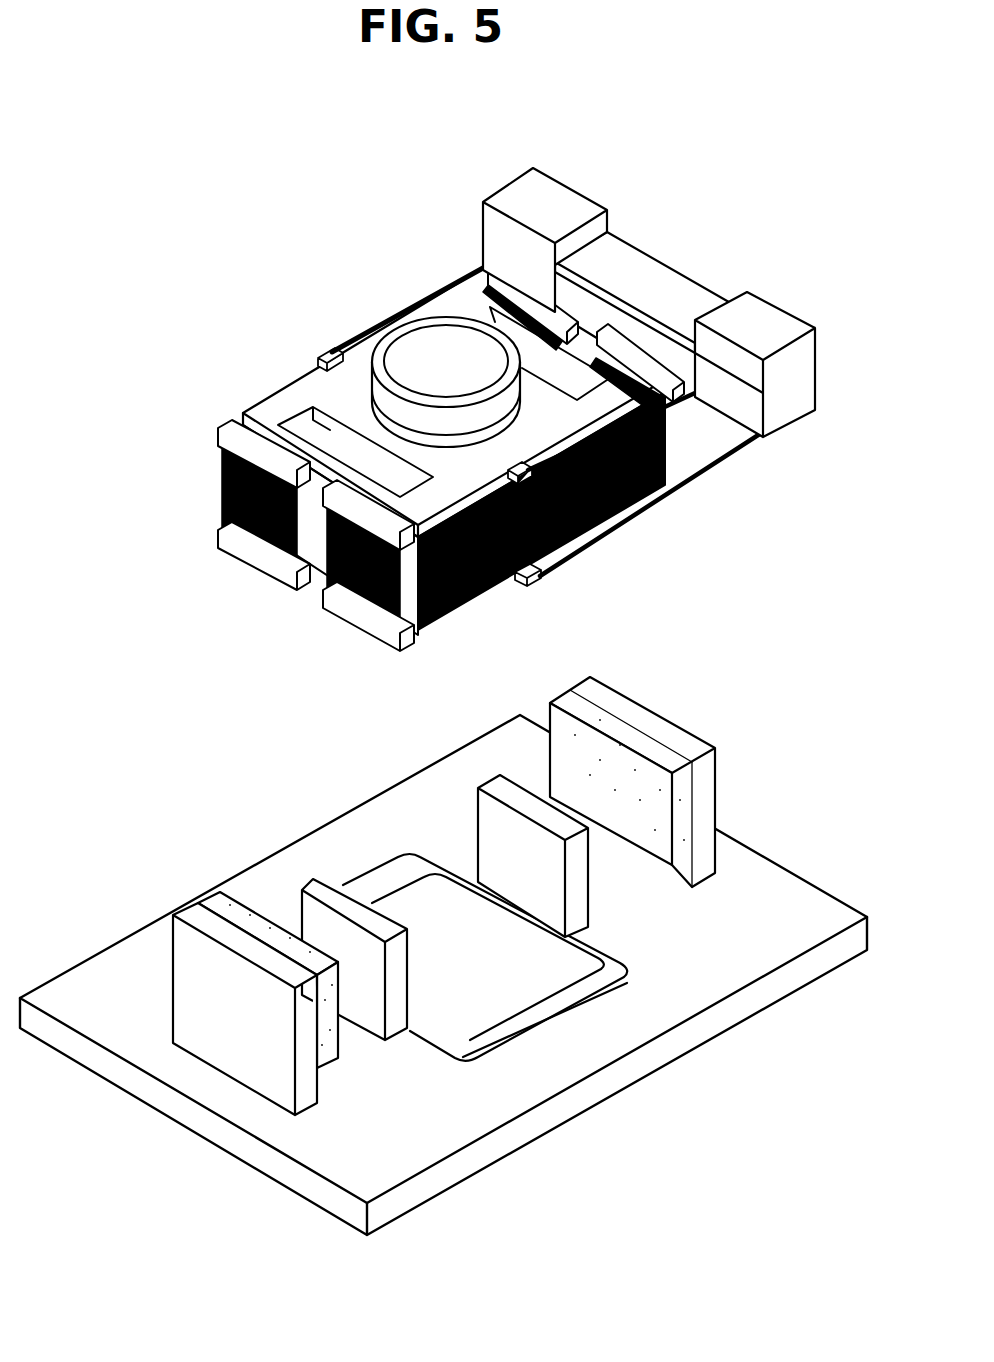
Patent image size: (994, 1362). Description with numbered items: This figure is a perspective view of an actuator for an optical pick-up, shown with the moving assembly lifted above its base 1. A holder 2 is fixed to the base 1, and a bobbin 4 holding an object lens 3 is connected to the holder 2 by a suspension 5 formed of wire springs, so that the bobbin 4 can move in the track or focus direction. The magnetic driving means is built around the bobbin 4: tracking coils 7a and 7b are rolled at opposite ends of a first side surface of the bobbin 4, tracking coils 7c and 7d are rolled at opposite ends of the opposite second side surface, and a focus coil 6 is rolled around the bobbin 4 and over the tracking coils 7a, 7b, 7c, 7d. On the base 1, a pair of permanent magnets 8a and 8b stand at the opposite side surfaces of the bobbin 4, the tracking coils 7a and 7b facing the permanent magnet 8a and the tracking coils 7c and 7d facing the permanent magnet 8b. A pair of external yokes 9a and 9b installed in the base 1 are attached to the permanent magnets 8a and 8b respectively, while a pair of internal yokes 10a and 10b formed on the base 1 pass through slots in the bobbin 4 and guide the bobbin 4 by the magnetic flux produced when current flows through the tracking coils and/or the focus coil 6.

The base 1 is at (808, 905).
The holder 2 is at (642, 270).
The object lens 3 is at (428, 340).
The bobbin 4 is at (540, 560).
The suspension (wire springs) 5 is at (367, 333).
The focus coil 6 is at (620, 517).
The tracking coil 7a is at (465, 597).
The tracking coil 7b is at (243, 428).
The tracking coil 7c is at (660, 407).
The tracking coil 7d is at (482, 268).
The permanent magnet 8a is at (227, 910).
The permanent magnet 8b is at (637, 742).
The external yoke 9a is at (200, 923).
The external yoke 9b is at (708, 788).
The internal yoke 10a is at (325, 893).
The internal yoke 10b is at (577, 877).